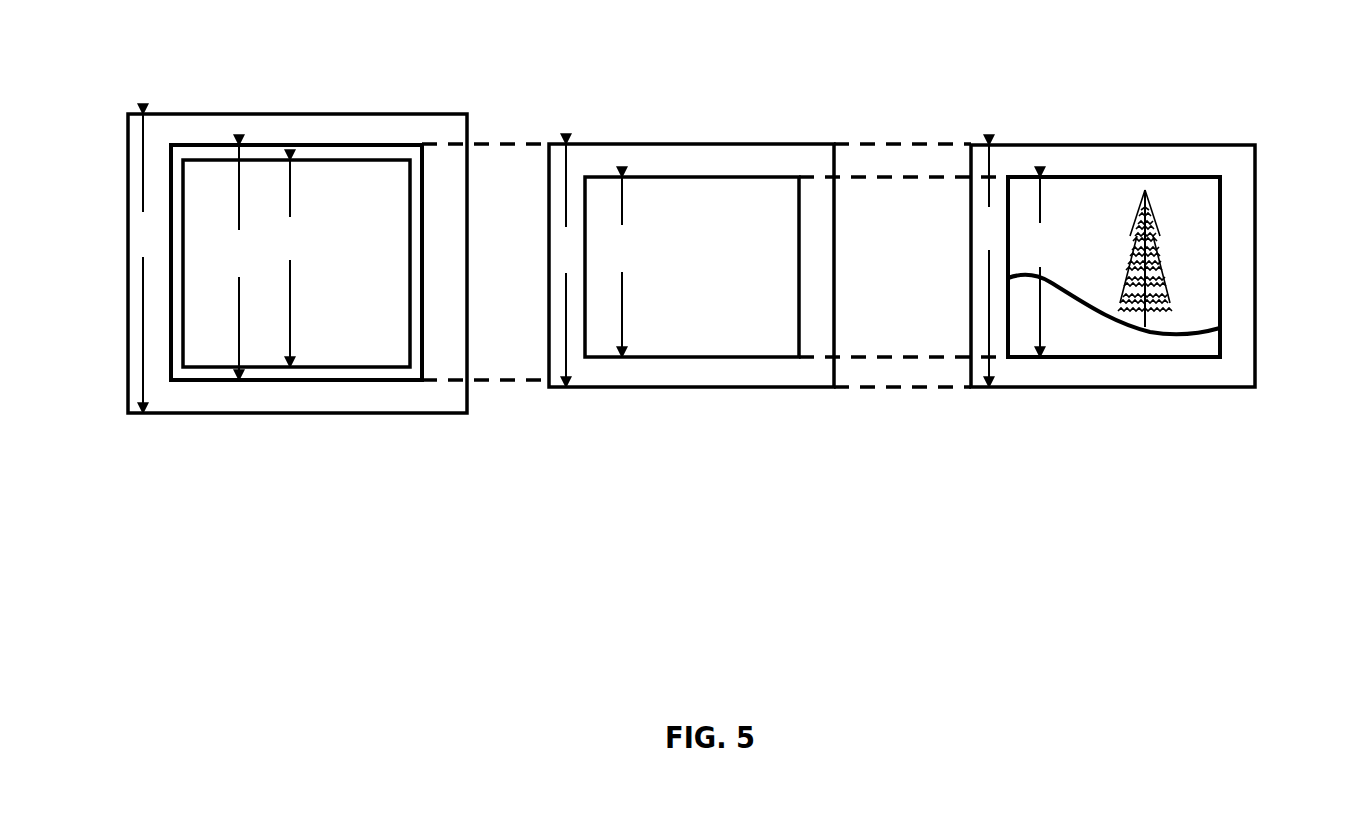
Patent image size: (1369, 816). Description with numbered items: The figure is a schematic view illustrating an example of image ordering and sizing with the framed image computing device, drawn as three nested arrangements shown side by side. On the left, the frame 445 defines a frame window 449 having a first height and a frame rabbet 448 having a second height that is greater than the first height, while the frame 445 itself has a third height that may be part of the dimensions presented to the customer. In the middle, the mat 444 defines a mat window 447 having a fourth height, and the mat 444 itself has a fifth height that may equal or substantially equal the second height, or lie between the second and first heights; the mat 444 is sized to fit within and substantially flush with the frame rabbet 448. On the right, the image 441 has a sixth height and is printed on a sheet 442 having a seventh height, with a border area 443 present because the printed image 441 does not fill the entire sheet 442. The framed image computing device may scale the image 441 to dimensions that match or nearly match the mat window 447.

The image 441 is at (1163, 185).
The sheet 442 is at (1238, 200).
The border area 443 is at (1140, 390).
The mat 444 is at (587, 162).
The frame 445 is at (155, 146).
The mat window 447 is at (742, 195).
The frame rabbet 448 is at (290, 153).
The frame window 449 is at (360, 180).